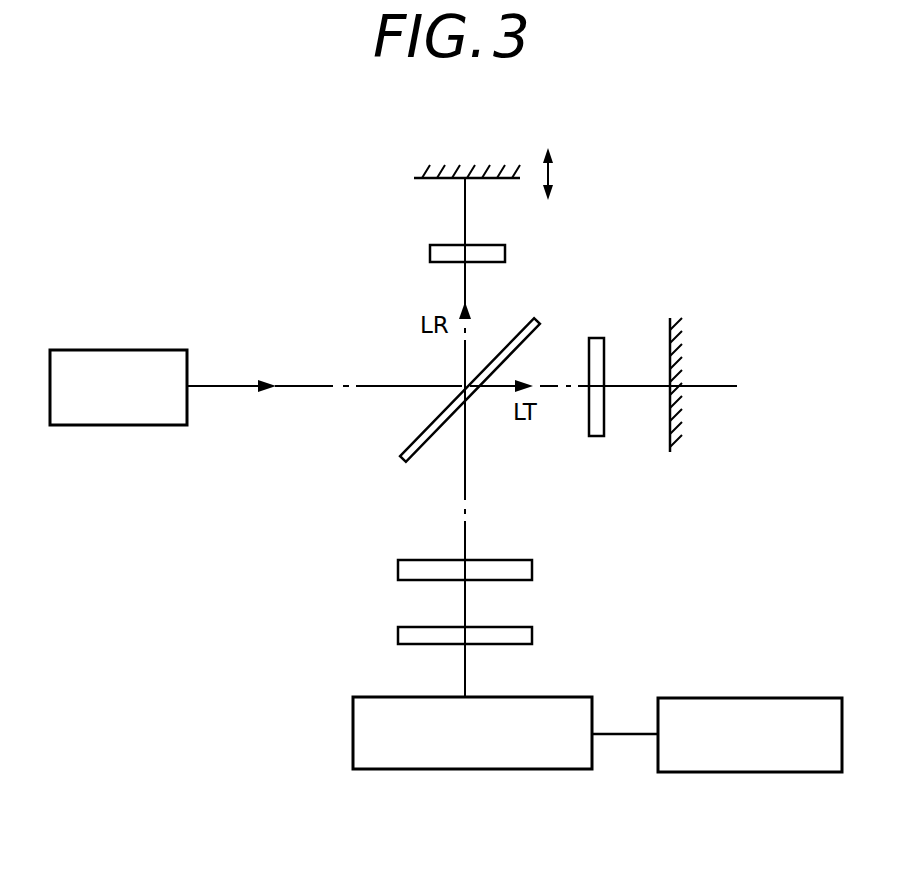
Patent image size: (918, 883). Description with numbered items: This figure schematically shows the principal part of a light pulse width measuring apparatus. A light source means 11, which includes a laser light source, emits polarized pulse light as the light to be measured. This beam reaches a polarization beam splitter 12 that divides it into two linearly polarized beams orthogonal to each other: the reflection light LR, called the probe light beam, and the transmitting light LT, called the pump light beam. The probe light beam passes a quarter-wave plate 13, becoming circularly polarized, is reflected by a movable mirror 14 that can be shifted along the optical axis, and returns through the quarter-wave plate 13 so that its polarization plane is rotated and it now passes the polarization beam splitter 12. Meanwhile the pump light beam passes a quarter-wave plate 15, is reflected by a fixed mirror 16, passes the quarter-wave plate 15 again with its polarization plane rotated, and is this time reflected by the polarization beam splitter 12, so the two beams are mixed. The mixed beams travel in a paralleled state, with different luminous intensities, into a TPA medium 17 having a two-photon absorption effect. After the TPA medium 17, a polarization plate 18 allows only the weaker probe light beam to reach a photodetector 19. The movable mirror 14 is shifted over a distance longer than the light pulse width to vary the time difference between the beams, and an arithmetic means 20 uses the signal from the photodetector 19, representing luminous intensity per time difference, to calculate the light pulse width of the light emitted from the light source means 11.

The light source means 11 is at (77, 350).
The polarization beam splitter 12 is at (403, 459).
The λ/4 plate 13 is at (505, 254).
The movable mirror 14 is at (428, 178).
The λ/4 plate 15 is at (595, 337).
The fixed mirror 16 is at (672, 318).
The TPA medium 17 is at (532, 570).
The polarization plate 18 is at (532, 637).
The photodetector 19 is at (378, 770).
The arithmetic means 20 is at (806, 698).